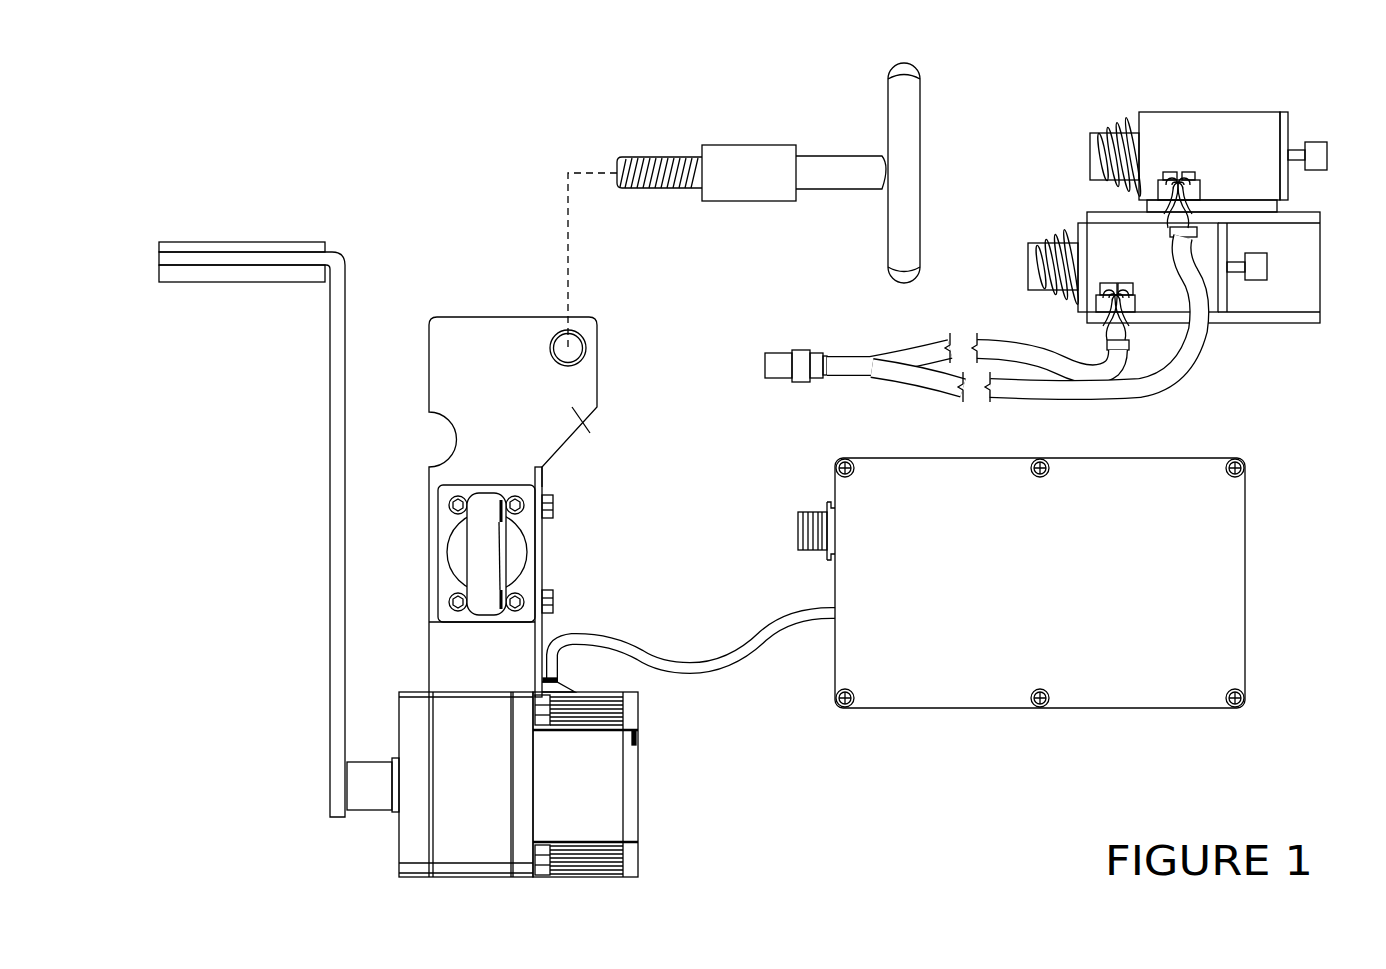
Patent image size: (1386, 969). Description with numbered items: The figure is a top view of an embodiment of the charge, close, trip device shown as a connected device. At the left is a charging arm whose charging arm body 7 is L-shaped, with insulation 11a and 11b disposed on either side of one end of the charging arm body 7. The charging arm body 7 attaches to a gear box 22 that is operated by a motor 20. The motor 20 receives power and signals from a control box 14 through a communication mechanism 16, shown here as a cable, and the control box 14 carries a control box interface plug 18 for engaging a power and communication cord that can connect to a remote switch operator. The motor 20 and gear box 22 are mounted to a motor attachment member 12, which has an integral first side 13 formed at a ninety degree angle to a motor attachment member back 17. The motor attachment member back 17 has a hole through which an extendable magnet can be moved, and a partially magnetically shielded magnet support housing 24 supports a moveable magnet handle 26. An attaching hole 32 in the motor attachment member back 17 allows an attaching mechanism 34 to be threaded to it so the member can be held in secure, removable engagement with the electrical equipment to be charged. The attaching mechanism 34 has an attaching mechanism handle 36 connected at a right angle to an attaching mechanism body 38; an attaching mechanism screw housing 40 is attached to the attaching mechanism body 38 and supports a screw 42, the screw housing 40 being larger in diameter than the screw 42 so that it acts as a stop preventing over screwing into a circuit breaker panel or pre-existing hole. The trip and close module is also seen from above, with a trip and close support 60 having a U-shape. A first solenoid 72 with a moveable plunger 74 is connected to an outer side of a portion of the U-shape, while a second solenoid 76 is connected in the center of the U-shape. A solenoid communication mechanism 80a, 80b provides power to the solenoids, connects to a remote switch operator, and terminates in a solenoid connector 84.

The charging arm body 7 is at (252, 513).
The insulation 11a is at (263, 282).
The insulation 11b is at (263, 244).
The motor attachment member 12 is at (493, 325).
The integral first side 13 is at (543, 556).
The control box 14 is at (930, 464).
The communication mechanism 16 is at (686, 668).
The motor attachment member back 17 is at (584, 428).
The control box interface plug 18 is at (813, 514).
The motor 20 is at (620, 776).
The gear box 22 is at (466, 720).
The partially magnetically shielded magnet support housing 24 is at (522, 489).
The moveable magnet handle 26 is at (490, 500).
The attaching hole 32 is at (586, 338).
The attaching mechanism 34 is at (937, 172).
The attaching mechanism handle 36 is at (918, 137).
The attaching mechanism body 38 is at (851, 159).
The attaching mechanism screw housing 40 is at (758, 148).
The screw 42 is at (658, 160).
The trip and close support 60 is at (1282, 323).
The first solenoid 72 is at (1214, 155).
The moveable plunger 74 is at (1312, 144).
The second solenoid 76 is at (1096, 228).
The solenoid communication mechanism 80a is at (1141, 384).
The solenoid communication mechanism 80b is at (1007, 342).
The solenoid connector 84 is at (794, 352).